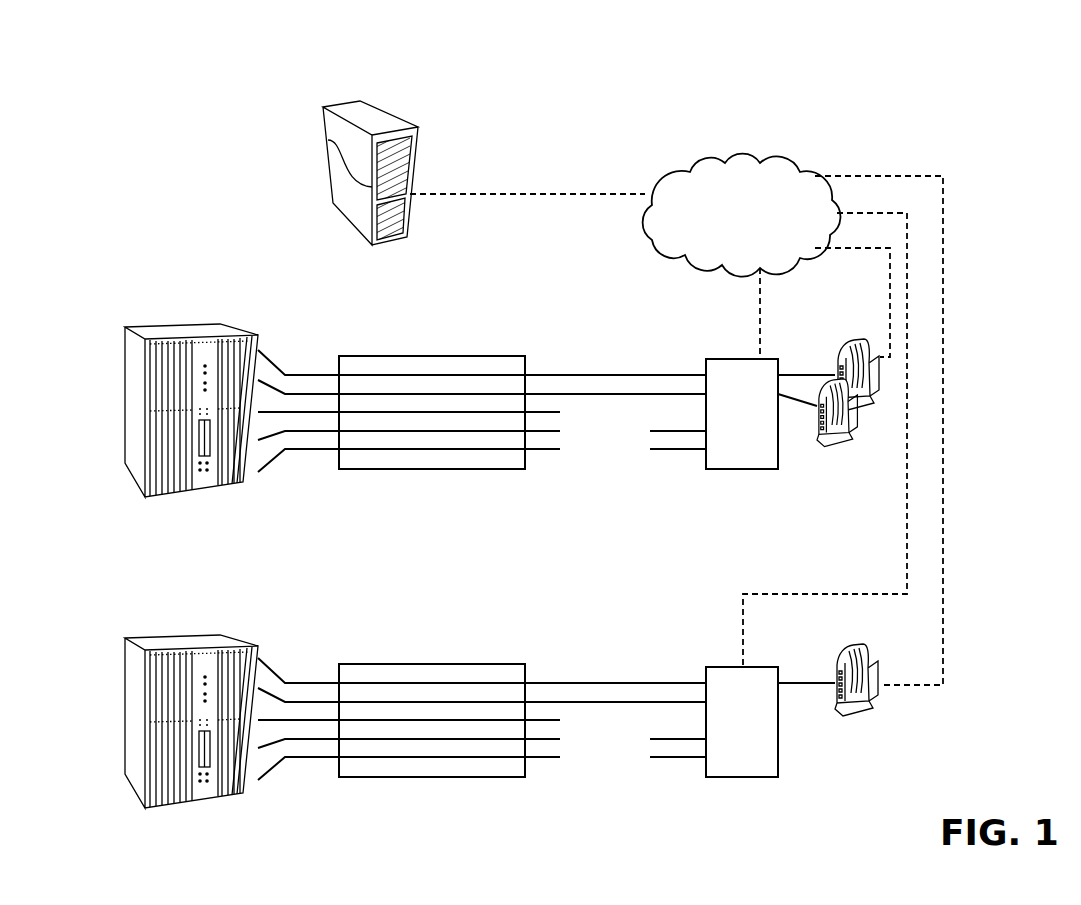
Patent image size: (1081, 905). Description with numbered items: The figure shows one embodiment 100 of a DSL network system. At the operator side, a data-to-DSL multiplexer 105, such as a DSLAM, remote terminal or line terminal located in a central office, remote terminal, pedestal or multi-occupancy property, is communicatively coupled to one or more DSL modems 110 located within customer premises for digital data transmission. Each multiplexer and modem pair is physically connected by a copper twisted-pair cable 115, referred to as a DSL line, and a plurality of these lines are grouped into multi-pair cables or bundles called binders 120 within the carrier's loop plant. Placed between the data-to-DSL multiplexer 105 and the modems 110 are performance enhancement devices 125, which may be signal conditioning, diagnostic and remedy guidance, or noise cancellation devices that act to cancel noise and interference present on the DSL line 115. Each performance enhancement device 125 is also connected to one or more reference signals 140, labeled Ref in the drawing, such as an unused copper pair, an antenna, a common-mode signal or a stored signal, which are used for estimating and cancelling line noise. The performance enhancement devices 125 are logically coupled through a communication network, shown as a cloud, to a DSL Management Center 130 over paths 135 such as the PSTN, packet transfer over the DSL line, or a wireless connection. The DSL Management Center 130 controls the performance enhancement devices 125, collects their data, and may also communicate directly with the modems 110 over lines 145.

The embodiment of the system 100 is at (562, 41).
The data-to-DSL multiplexer 105 is at (183, 326).
The DSL modem 110 is at (858, 428).
The copper twisted-pair cable 115 is at (606, 394).
The binder 120 is at (422, 356).
The performance enhancement device 125 is at (726, 470).
The DSL Management Center 130 is at (384, 107).
The path 135 is at (545, 192).
The reference signals 140 is at (612, 466).
The lines 145 is at (944, 292).